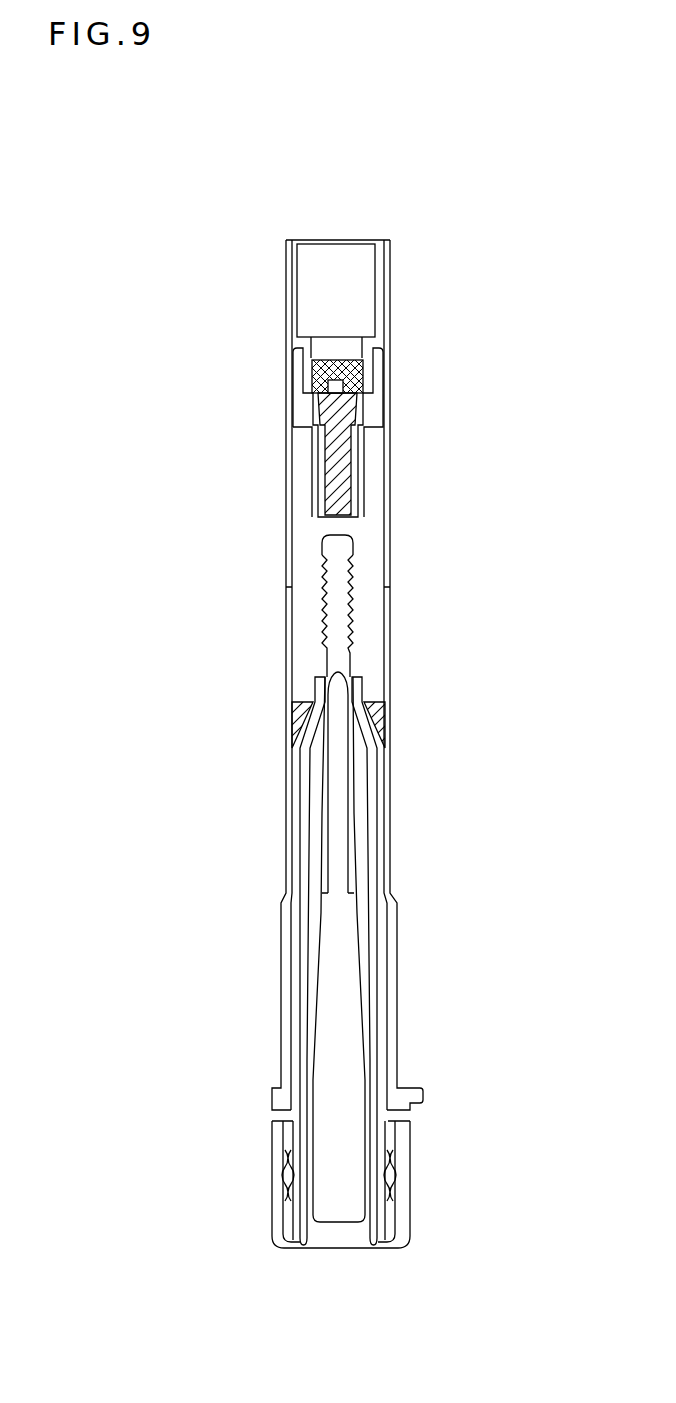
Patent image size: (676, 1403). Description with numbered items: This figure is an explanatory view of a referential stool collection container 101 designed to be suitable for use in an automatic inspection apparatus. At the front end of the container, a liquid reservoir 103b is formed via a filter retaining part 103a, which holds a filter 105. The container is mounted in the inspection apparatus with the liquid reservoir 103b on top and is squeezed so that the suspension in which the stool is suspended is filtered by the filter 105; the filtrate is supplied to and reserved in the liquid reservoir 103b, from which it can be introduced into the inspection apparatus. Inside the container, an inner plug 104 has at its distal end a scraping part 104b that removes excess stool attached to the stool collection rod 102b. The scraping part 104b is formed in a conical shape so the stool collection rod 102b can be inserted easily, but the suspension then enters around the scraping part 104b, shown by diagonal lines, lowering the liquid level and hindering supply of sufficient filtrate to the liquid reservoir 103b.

The stool collection container 101 is at (348, 667).
The liquid reservoir 103b is at (339, 265).
The filter retaining part 103a is at (355, 438).
The filter 105 is at (325, 407).
The stool collection rod 102b is at (338, 553).
The inner plug 104 is at (382, 797).
The scraping part 104b is at (367, 703).